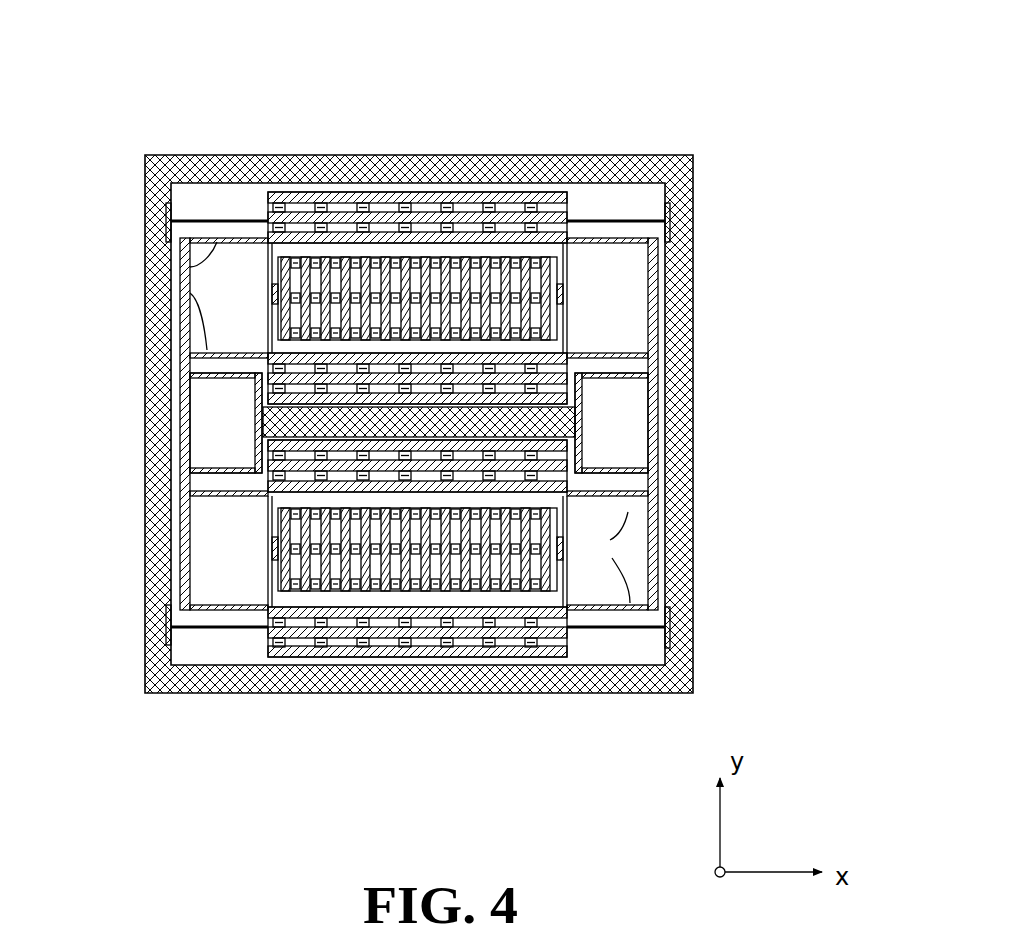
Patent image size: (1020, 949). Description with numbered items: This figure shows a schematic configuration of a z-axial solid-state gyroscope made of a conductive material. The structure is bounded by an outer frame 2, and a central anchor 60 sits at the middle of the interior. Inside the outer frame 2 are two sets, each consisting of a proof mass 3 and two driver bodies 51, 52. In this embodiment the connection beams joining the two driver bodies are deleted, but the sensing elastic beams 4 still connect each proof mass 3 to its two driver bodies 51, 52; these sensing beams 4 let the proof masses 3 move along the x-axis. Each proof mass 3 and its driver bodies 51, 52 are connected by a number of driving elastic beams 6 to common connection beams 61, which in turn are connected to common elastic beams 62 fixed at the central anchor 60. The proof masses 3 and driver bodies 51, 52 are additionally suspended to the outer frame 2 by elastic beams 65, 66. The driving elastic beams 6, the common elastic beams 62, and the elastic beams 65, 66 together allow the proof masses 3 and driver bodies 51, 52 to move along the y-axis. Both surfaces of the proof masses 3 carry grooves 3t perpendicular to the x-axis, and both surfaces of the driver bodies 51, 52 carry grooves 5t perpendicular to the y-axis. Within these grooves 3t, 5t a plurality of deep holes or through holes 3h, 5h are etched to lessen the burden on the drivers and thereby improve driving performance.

The outer frame 2 is at (680, 295).
The proof mass 3 is at (417, 296).
The grooves 3t is at (295, 272).
The deep holes or through holes 3h is at (360, 275).
The sensing elastic beam 4 is at (270, 327).
The grooves 5t is at (443, 197).
The deep holes or through holes 5h is at (505, 197).
The driver body 51 is at (522, 342).
The driver body 52 is at (567, 455).
The driving elastic beams 6 is at (190, 293).
The central anchor 60 is at (262, 428).
The common connection beams 61 is at (188, 332).
The common elastic beams 62 is at (215, 468).
The elastic beams 65 is at (640, 220).
The elastic beams 66 is at (668, 232).